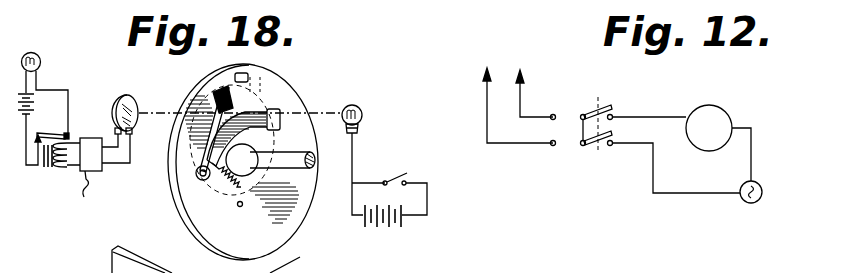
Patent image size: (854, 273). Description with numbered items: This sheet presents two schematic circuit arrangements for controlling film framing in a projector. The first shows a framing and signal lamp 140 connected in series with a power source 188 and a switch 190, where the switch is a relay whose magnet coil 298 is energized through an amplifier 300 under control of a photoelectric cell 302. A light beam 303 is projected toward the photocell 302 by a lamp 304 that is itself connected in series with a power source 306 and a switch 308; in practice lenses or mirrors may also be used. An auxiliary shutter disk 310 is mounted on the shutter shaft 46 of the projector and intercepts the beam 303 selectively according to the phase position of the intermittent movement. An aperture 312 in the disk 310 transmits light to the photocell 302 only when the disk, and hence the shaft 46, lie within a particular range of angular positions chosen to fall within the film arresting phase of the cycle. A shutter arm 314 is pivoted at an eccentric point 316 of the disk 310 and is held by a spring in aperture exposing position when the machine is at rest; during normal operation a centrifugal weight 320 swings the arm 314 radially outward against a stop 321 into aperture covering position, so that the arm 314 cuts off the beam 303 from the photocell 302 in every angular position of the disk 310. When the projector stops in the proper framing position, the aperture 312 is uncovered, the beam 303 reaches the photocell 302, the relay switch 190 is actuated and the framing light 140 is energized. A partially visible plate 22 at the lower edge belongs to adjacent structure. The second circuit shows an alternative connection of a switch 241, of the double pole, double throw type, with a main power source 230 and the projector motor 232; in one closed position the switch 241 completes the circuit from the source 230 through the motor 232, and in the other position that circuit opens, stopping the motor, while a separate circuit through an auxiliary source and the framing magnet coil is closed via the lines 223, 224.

In FIG. 18, the framing and signal lamp 140 is at (34, 54).
In FIG. 18, the power source 188 is at (36, 95).
In FIG. 18, the switch 190 is at (49, 130).
In FIG. 18, the magnet coil 298 is at (58, 168).
In FIG. 18, the amplifier 300 is at (96, 172).
In FIG. 18, the photoelectric cell 302 is at (140, 89).
In FIG. 18, the light beam 303 is at (300, 113).
In FIG. 18, the auxiliary shutter disk 310 is at (193, 218).
In FIG. 18, the aperture 312 is at (190, 109).
In FIG. 18, the shutter arm 314 is at (207, 156).
In FIG. 18, the eccentric point 316 is at (232, 205).
In FIG. 18, the centrifugal weight 320 is at (275, 110).
In FIG. 18, the stop 321 is at (248, 77).
In FIG. 18, the shutter shaft 46 is at (278, 155).
In FIG. 18, the lamp 304 is at (364, 117).
In FIG. 18, the switch 308 is at (394, 176).
In FIG. 18, the power source 306 is at (398, 229).
In FIG. 18, the plate 22 is at (112, 266).
In FIG. 12, the line 223 is at (486, 108).
In FIG. 12, the line 224 is at (523, 90).
In FIG. 12, the switch 241 is at (591, 105).
In FIG. 12, the projector motor 232 is at (719, 106).
In FIG. 12, the main power source 230 is at (752, 204).